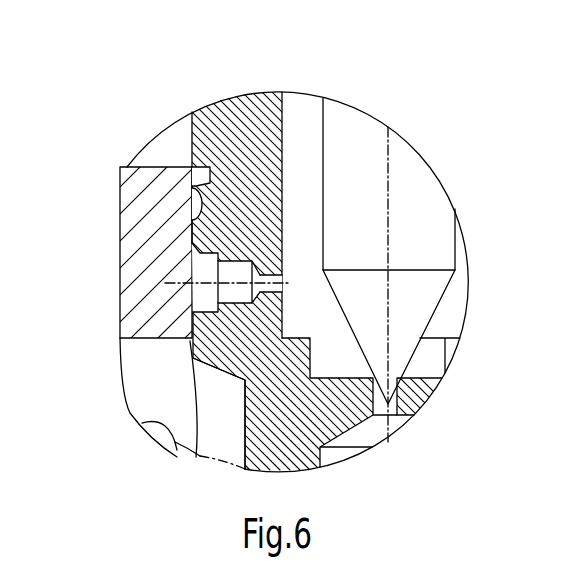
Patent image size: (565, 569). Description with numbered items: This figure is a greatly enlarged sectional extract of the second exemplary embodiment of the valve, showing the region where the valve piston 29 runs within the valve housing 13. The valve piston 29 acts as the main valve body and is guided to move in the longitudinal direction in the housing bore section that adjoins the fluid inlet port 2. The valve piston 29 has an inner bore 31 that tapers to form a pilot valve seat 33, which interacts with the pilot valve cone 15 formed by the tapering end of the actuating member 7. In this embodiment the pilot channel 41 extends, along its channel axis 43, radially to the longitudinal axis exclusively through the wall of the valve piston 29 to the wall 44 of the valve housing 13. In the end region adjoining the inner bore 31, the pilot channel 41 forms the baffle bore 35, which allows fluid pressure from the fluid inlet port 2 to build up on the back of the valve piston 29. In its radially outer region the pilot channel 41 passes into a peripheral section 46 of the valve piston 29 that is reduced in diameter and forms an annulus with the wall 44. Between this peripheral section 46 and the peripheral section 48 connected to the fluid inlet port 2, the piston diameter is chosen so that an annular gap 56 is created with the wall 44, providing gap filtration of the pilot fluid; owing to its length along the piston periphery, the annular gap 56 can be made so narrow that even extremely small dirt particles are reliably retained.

The fluid inlet port 2 is at (177, 457).
The actuating member 7 is at (427, 198).
The valve housing 13 is at (163, 163).
The pilot valve cone 15 is at (425, 318).
The valve piston 29 is at (222, 122).
The inner bore 31 is at (282, 215).
The pilot valve seat 33 is at (415, 394).
The baffle bore 35 is at (193, 243).
The pilot channel 41 is at (283, 292).
The channel axis 43 is at (165, 288).
The wall of the valve housing 44 is at (192, 185).
The peripheral section of reduced diameter 46 is at (192, 275).
The peripheral section connected to the fluid inlet 48 is at (188, 346).
The annular gap 56 is at (190, 341).